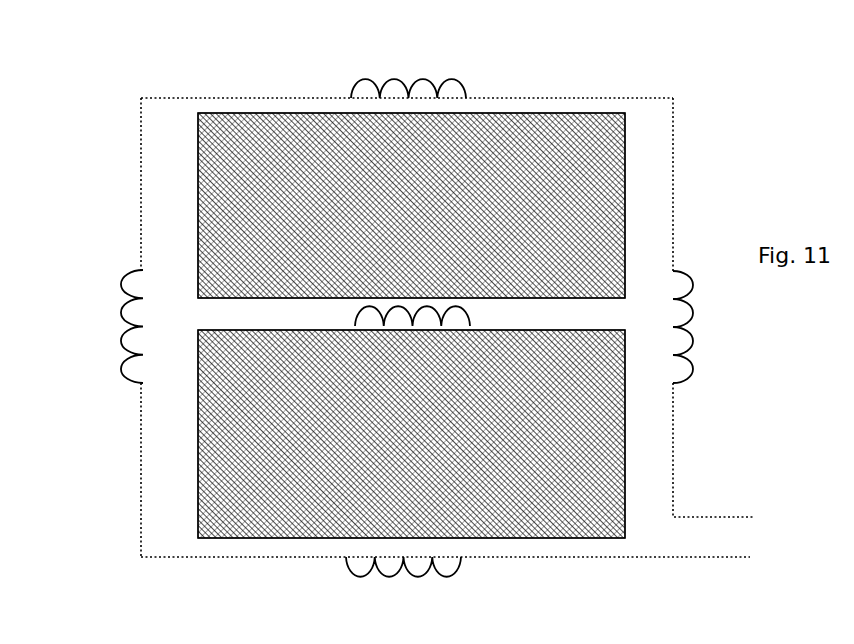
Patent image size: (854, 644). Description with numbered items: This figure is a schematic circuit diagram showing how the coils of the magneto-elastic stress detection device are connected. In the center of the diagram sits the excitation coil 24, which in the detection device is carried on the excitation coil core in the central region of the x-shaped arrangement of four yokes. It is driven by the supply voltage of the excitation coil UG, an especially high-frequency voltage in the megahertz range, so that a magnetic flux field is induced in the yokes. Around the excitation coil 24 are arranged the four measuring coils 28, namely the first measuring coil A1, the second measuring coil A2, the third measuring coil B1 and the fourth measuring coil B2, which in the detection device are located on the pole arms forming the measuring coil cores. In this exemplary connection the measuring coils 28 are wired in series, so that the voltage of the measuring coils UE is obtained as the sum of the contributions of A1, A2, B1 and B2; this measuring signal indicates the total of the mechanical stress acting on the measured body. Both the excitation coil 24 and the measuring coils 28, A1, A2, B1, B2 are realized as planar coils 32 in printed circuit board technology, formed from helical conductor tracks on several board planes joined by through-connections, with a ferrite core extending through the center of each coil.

The excitation coil 24 is at (458, 297).
The measuring coils 28 is at (356, 71).
The planar coils 32 is at (430, 88).
The first measuring coil A1 is at (411, 569).
The second measuring coil A2 is at (456, 70).
The third measuring coil B1 is at (113, 275).
The fourth measuring coil B2 is at (680, 376).
The supply voltage of the excitation coil UG is at (411, 434).
The voltage of the measuring coils UE is at (457, 327).